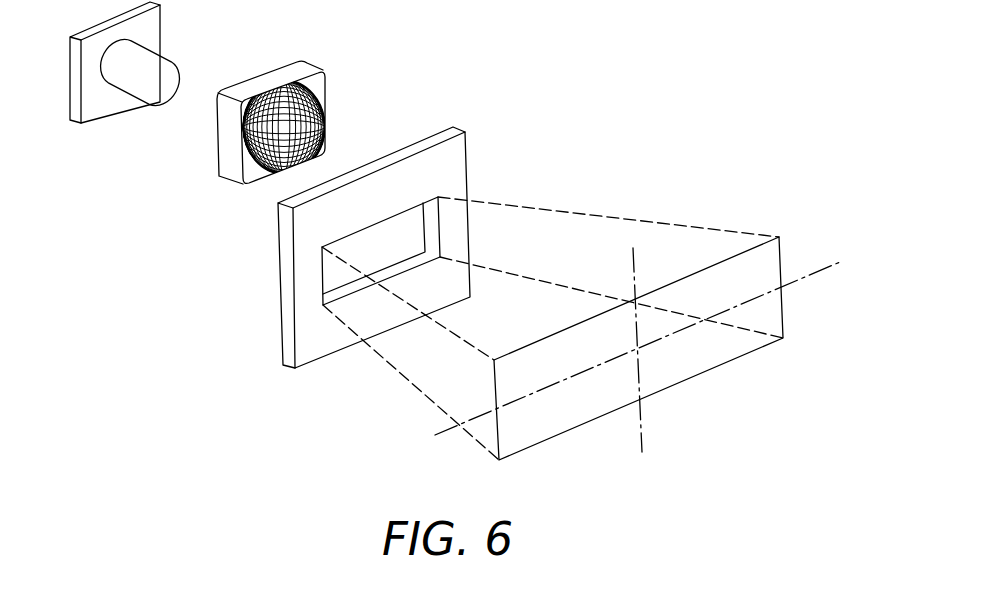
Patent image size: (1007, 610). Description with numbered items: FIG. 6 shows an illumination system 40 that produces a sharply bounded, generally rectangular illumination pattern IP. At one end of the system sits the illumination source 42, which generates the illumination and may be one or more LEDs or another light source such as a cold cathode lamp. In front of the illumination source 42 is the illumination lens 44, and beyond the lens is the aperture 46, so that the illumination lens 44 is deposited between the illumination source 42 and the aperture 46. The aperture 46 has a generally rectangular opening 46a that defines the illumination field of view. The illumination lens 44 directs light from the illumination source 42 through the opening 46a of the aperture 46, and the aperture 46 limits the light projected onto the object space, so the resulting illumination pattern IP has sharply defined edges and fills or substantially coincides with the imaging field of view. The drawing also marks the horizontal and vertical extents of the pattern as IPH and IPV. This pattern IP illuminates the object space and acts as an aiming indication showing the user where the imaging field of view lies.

The illumination system 40 is at (440, 53).
The illumination source 42 is at (167, 70).
The illumination lens 44 is at (236, 181).
The aperture 46 is at (367, 261).
The generally rectangular opening 46a is at (418, 260).
The illumination pattern IP is at (788, 305).
The image plane horizontal axis IPH is at (810, 272).
The image plane vertical axis IPV is at (642, 430).